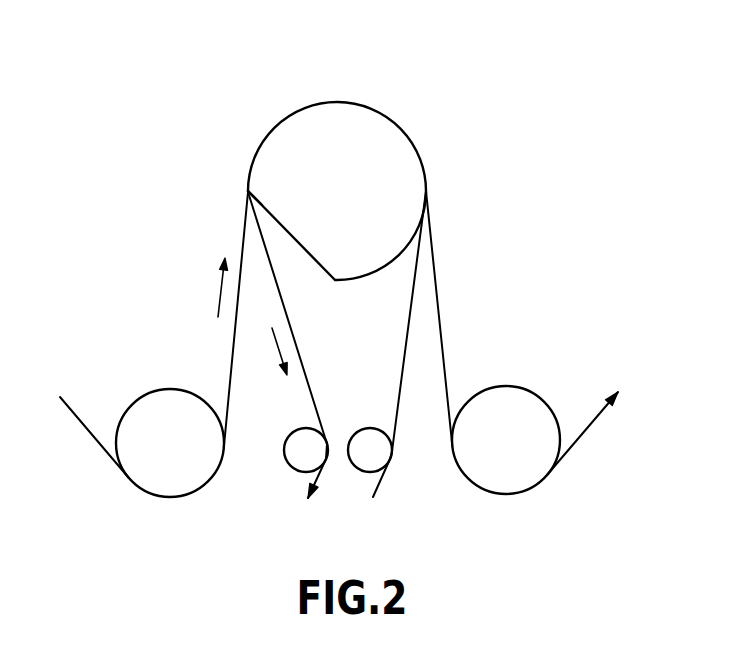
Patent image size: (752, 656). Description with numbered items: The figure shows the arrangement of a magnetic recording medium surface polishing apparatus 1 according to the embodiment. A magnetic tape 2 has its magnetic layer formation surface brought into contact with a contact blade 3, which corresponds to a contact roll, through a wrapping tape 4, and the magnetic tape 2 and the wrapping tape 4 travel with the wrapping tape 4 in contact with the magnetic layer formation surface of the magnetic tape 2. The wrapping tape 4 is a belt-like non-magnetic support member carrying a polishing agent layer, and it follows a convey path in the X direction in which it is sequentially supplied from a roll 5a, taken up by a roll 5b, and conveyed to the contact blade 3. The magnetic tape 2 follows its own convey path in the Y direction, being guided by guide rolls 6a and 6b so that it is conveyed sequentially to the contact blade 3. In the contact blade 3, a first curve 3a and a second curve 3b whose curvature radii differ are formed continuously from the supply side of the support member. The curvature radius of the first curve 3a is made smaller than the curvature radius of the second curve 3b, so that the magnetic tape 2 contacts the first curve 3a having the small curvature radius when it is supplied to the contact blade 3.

The magnetic recording medium surface polishing apparatus 1 is at (420, 122).
The magnetic tape 2 is at (440, 307).
The contact blade 3 is at (424, 184).
The first curve 3a is at (252, 192).
The second curve 3b is at (378, 117).
The wrapping tape 4 is at (405, 348).
The roll 5a is at (385, 453).
The roll 5b is at (290, 458).
The guide roll 6a is at (162, 488).
The guide roll 6b is at (523, 395).